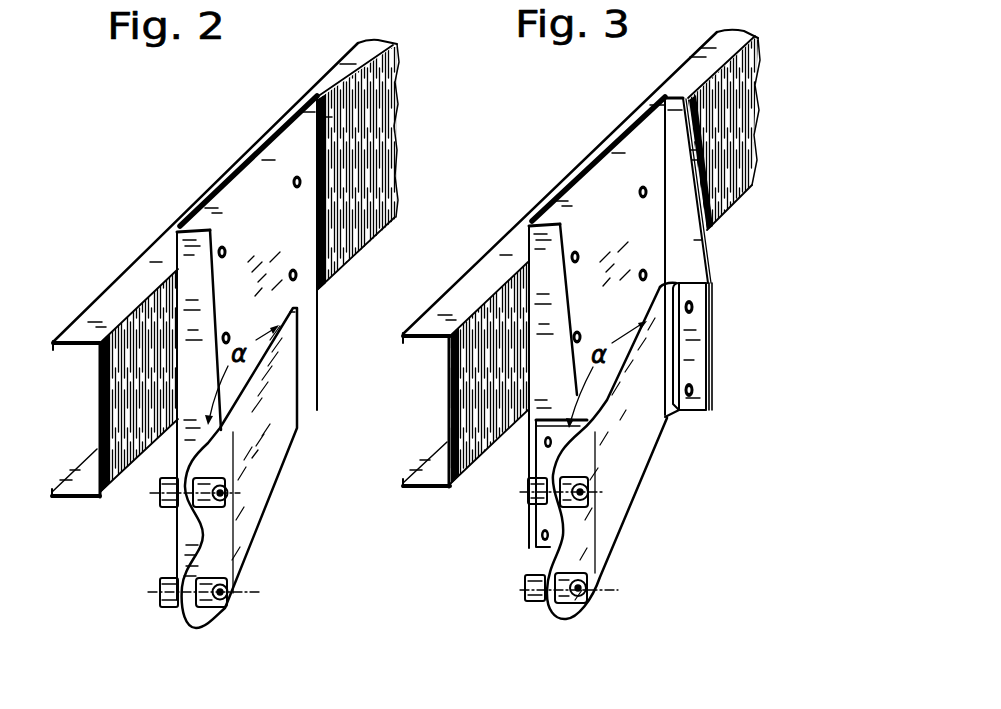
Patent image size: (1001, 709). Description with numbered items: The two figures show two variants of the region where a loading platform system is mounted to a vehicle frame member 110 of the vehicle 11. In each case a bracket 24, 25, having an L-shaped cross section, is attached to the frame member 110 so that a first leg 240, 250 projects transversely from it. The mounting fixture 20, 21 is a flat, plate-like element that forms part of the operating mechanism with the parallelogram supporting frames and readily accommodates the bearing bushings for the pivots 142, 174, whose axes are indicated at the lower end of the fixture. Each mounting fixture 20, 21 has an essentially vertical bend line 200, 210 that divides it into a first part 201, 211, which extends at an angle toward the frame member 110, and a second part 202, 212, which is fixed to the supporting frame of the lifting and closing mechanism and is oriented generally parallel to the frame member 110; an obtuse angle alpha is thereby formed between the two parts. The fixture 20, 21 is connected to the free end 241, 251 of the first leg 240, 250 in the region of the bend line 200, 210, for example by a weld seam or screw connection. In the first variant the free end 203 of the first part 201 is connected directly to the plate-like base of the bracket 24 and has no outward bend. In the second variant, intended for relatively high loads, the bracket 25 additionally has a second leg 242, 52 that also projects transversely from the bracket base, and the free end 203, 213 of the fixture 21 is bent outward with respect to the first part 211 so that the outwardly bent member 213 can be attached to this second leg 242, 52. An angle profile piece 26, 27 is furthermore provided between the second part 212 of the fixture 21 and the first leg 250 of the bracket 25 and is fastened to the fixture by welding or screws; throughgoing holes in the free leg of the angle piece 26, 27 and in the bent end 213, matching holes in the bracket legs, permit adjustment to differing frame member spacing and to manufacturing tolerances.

In FIG. 2, the vehicle 11 is at (287, 268).
In FIG. 3, the vehicle 11 is at (634, 258).
In FIG. 2, the vehicle frame member 110 is at (372, 132).
In FIG. 3, the vehicle frame member 110 is at (740, 122).
In FIG. 2, the bracket 24 is at (212, 253).
In FIG. 3, the bracket 24 is at (700, 256).
In FIG. 2, the bracket 25 is at (262, 197).
In FIG. 3, the bracket 25 is at (612, 212).
In FIG. 2, the first leg of the bracket 240 is at (135, 392).
In FIG. 3, the first leg of the bracket 240 is at (533, 260).
In FIG. 2, the first leg of the bracket 250 is at (187, 303).
In FIG. 2, the free end of the first leg 241 is at (104, 517).
In FIG. 2, the free end of the first leg 251 is at (178, 458).
In FIG. 3, the second leg of the bracket 242 is at (759, 254).
In FIG. 3, the second leg of the bracket 52 is at (683, 207).
In FIG. 2, the mounting fixture 20 is at (246, 466).
In FIG. 3, the mounting fixture 20 is at (685, 451).
In FIG. 2, the mounting fixture 21 is at (246, 466).
In FIG. 3, the mounting fixture 21 is at (617, 427).
In FIG. 2, the bend line 200 is at (316, 512).
In FIG. 2, the bend line 210 is at (215, 466).
In FIG. 2, the first part of the mounting fixture 201 is at (339, 412).
In FIG. 2, the first part of the mounting fixture 211 is at (267, 432).
In FIG. 2, the second part of the mounting fixture 202 is at (126, 603).
In FIG. 2, the second part of the mounting fixture 212 is at (183, 543).
In FIG. 2, the free end of the first part 203 is at (364, 312).
In FIG. 3, the free end of the first part 203 is at (767, 350).
In FIG. 2, the outwardly bent free end 213 is at (292, 357).
In FIG. 3, the outwardly bent free end 213 is at (695, 352).
In FIG. 3, the angle profile piece 26 is at (512, 496).
In FIG. 3, the connecting piece 27 is at (528, 460).
In FIG. 2, the pivot 142 is at (230, 495).
In FIG. 3, the pivot 142 is at (598, 475).
In FIG. 2, the pivot 174 is at (256, 592).
In FIG. 3, the pivot 174 is at (615, 558).